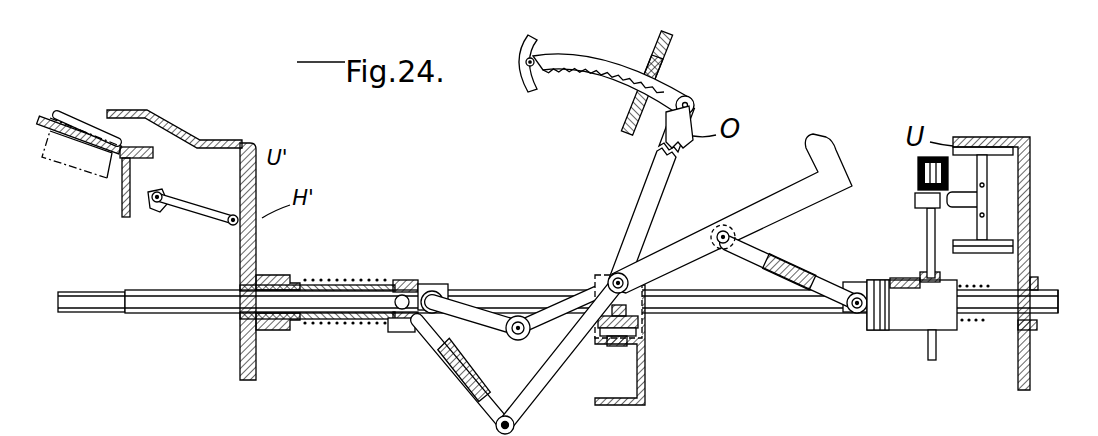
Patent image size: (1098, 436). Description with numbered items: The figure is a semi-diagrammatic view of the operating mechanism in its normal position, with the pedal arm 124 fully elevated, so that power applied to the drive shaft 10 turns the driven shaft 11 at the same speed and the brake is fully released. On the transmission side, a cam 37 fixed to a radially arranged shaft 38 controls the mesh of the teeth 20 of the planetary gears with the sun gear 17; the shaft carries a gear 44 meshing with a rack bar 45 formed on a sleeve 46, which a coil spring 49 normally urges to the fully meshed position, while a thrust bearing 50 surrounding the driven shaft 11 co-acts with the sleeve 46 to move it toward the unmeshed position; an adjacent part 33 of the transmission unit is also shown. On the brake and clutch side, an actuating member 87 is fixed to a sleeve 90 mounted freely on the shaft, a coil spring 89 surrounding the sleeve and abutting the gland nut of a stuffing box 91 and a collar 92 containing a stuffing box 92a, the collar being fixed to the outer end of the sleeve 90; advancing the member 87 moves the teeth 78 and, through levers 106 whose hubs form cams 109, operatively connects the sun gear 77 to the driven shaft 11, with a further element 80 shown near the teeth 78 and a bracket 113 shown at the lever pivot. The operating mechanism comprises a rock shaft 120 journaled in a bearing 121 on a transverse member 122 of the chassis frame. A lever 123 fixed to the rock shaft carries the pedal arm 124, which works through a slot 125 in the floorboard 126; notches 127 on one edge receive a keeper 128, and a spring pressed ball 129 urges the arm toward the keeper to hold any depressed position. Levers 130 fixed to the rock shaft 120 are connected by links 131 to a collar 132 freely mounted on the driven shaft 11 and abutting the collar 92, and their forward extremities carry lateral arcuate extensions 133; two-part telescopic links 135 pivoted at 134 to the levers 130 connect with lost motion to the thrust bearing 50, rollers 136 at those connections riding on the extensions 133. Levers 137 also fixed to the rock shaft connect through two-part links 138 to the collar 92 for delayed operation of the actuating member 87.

The drive shaft 10 is at (1048, 293).
The driven shaft 11 is at (175, 314).
The sun gear 17 is at (1031, 222).
The teeth of the planetary gears 20 is at (1000, 153).
The cylinder 33 is at (986, 199).
The cam 37 is at (916, 198).
The radially arranged shaft 38 is at (928, 216).
The gear 44 is at (921, 276).
The rack bar 45 is at (898, 280).
The sleeve 46 is at (910, 314).
The coil spring 49 is at (972, 324).
The thrust bearing 50 is at (858, 281).
The sun gear 77 is at (122, 205).
The teeth 78 is at (78, 128).
The plate 80 is at (68, 158).
The actuating member 87 is at (224, 140).
The coil spring 89 is at (330, 277).
The sleeve 90 is at (383, 322).
The stuffing box 91 is at (300, 276).
The collar 92 is at (402, 281).
The stuffing box 92a is at (415, 288).
The lever 106 is at (211, 216).
The cam 109 is at (163, 200).
The pivot bracket 113 is at (160, 209).
The rock shaft 120 is at (611, 275).
The bearing 121 is at (642, 316).
The transverse member 122 is at (648, 389).
The lever 123 is at (653, 177).
The pedal arm 124 is at (590, 56).
The slot 125 is at (692, 90).
The floorboard 126 is at (686, 49).
The notches 127 is at (584, 76).
The keeper 128 is at (633, 102).
The spring pressed ball 129 is at (658, 74).
The lever 130 is at (684, 242).
The link 131 is at (487, 300).
The collar 132 is at (434, 290).
The lateral arcuate extension 133 is at (832, 163).
The pivotal connection 134 is at (725, 232).
The two-part link 135 is at (806, 292).
The roller 136 is at (852, 318).
The lever 137 is at (545, 388).
The two-part link 138 is at (458, 380).